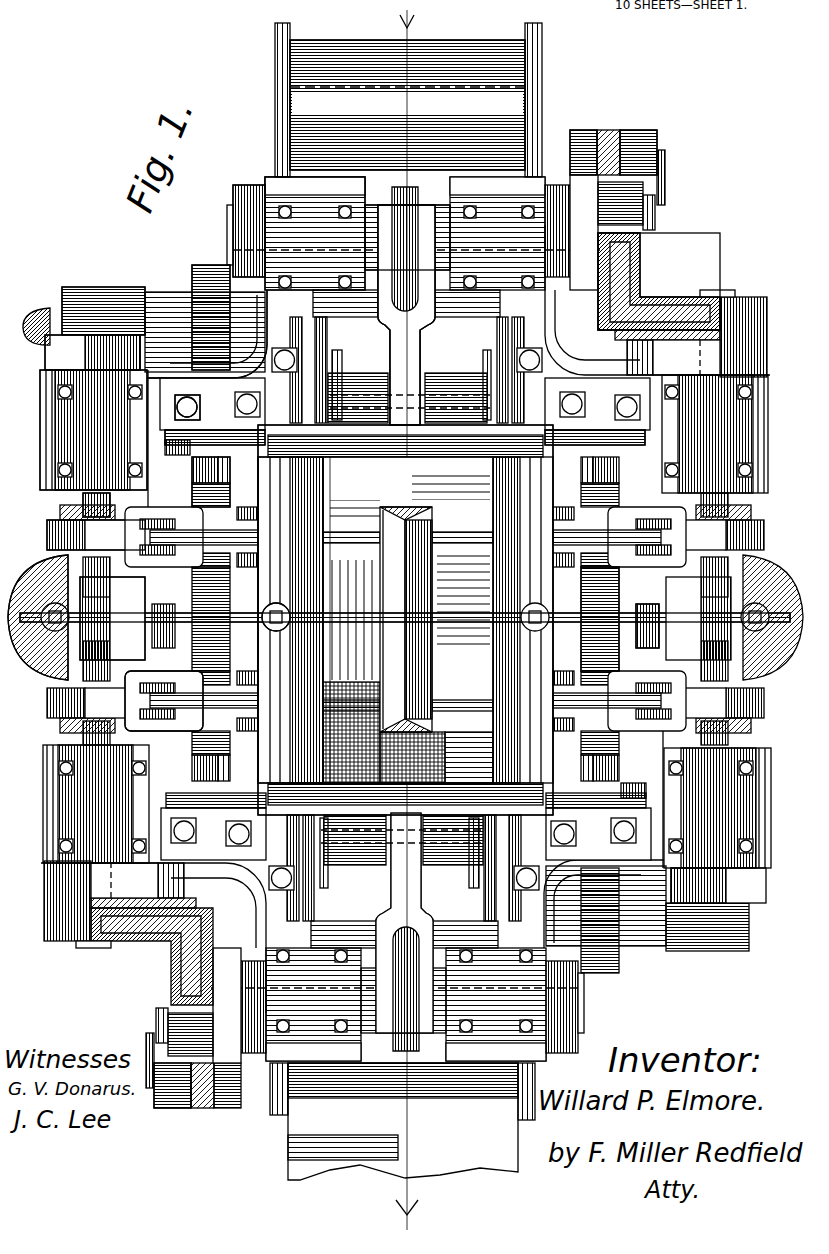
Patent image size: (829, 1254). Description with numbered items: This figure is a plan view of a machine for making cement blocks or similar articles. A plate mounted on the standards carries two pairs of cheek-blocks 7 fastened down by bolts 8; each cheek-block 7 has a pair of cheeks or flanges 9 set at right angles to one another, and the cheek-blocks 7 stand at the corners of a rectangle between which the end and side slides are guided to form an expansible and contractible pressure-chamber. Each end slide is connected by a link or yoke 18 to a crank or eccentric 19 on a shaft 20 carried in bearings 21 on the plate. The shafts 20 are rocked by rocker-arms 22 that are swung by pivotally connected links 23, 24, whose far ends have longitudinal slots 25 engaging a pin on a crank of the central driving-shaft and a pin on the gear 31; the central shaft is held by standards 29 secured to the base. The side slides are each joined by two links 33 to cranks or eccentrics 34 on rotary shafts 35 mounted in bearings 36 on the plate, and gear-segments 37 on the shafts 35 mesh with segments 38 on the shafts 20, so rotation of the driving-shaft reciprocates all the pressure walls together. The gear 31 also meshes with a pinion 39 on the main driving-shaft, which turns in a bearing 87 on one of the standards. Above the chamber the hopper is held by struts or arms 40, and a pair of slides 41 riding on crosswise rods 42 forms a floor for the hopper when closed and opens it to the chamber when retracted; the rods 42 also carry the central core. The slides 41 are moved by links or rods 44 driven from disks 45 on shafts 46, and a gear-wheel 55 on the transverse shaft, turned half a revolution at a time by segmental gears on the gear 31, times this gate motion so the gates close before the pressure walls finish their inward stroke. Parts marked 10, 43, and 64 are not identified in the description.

The cheek-block 7 is at (182, 368).
The bolt 8 is at (197, 407).
The cheek or flange 9 is at (175, 440).
The drum 10 is at (292, 92).
The link or yoke 18 is at (398, 325).
The crank or eccentric 19 is at (402, 250).
The shaft 20 is at (236, 238).
The bearing 21 is at (300, 190).
The rocker-arm 22 is at (590, 130).
The link 23 is at (640, 150).
The link 24 is at (165, 1108).
The longitudinal slot 25 is at (615, 625).
The standard 29 is at (300, 580).
The gear 31 is at (280, 592).
The link 33 is at (196, 500).
The crank or eccentric 34 is at (60, 535).
The rotary shaft 35 is at (62, 505).
The bearing 36 is at (62, 420).
The gear-segment 37 is at (705, 300).
The segment 38 is at (603, 303).
The pinion 39 is at (200, 282).
The strut or arm 40 is at (590, 432).
The slide 41 is at (478, 478).
The rod 42 is at (285, 520).
The block 43 is at (640, 725).
The link or rod 44 is at (200, 614).
The disk 45 is at (75, 580).
The shaft 46 is at (60, 660).
The gear-wheel 55 is at (98, 335).
The clevis 64 is at (172, 712).
The bearing 87 is at (87, 300).